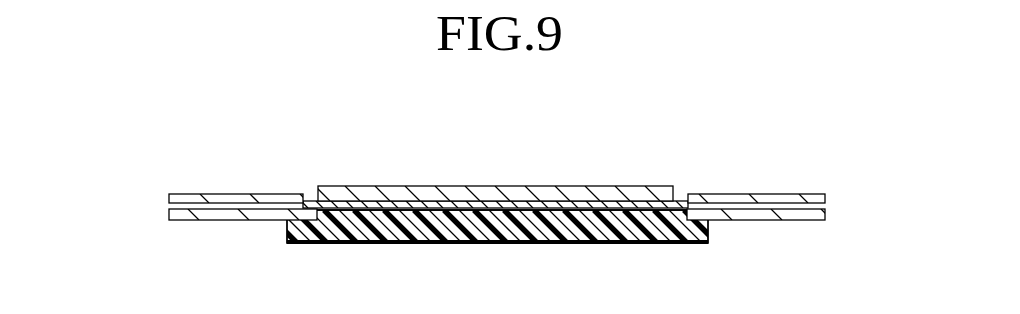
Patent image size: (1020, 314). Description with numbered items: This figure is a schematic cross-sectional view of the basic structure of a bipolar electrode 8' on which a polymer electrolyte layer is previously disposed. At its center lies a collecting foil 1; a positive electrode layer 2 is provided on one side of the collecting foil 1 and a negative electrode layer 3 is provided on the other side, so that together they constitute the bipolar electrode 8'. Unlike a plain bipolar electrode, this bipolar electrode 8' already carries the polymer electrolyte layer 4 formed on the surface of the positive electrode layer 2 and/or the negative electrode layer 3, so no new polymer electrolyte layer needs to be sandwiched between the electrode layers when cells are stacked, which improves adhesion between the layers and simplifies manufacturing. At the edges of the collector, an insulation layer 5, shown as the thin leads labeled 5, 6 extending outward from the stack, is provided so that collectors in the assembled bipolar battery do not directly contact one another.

The collecting foil 1 is at (538, 201).
The positive electrode layer 2 is at (603, 195).
The negative electrode layer 3 is at (432, 228).
The polymer electrolyte layer 4 is at (361, 245).
The insulation layer 5 is at (169, 197).
The lead electrode 6 is at (826, 198).
The bipolar electrode 8' is at (495, 196).